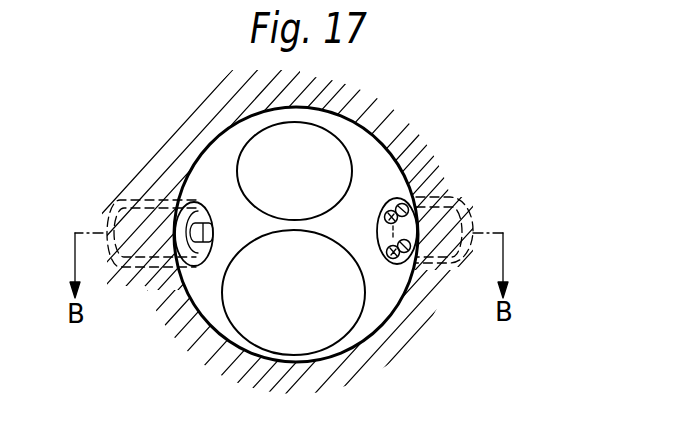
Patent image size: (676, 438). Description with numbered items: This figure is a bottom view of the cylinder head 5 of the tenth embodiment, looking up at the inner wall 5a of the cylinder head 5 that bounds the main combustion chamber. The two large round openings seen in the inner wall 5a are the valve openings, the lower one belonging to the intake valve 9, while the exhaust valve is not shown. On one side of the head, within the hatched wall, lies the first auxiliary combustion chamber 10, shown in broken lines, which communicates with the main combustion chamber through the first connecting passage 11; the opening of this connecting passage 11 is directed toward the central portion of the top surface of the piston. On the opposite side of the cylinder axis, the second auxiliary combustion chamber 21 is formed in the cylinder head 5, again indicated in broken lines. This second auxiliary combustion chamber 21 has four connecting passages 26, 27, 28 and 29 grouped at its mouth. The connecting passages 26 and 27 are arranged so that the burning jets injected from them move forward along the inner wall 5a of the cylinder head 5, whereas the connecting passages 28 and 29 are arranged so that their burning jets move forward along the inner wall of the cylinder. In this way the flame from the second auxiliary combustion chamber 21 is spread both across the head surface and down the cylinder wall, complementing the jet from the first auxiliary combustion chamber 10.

The cylinder head 5 is at (370, 118).
The inner wall of the cylinder head 5a is at (351, 225).
The intake valve 9 is at (302, 342).
The first auxiliary combustion chamber 10 is at (138, 207).
The first connecting passage 11 is at (183, 275).
The second auxiliary combustion chamber 21 is at (450, 228).
The connecting passage 26 is at (389, 211).
The connecting passage 27 is at (393, 262).
The connecting passage 28 is at (414, 195).
The connecting passage 29 is at (391, 268).